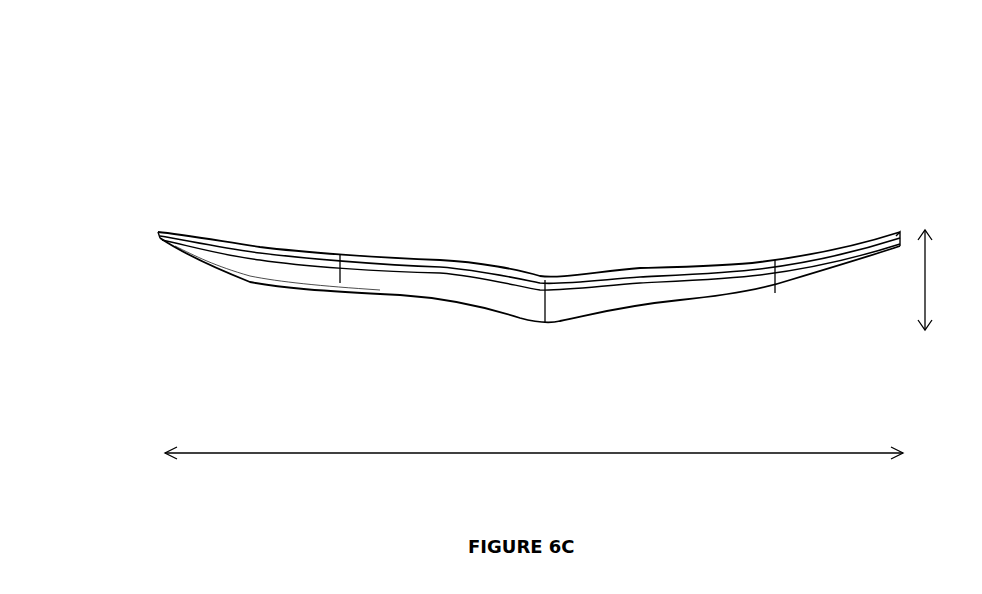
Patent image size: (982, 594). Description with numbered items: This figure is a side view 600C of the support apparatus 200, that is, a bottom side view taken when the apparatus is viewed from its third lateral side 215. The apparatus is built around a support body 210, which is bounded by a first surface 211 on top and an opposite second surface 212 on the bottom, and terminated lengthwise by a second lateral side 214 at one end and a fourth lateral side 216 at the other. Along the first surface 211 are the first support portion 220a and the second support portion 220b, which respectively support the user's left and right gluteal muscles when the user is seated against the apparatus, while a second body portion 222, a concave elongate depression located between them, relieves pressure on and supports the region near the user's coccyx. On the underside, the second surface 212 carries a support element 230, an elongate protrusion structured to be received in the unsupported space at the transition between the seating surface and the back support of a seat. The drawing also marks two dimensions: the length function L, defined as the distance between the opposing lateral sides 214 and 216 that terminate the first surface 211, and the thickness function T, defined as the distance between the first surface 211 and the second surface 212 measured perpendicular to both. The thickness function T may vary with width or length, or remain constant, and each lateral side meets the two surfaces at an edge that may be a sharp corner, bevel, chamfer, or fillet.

The side view 600C is at (78, 105).
The support apparatus 200 is at (469, 263).
The support body 210 is at (529, 275).
The first surface 211 is at (384, 246).
The second surface 212 is at (530, 316).
The second lateral side 214 is at (898, 222).
The third lateral side 215 is at (405, 281).
The fourth lateral side 216 is at (147, 247).
The first support portion 220a is at (722, 255).
The second support portion 220b is at (255, 234).
The second body portion 222 is at (538, 258).
The support element 230 is at (333, 296).
The thickness function T is at (930, 280).
The length function L is at (534, 465).